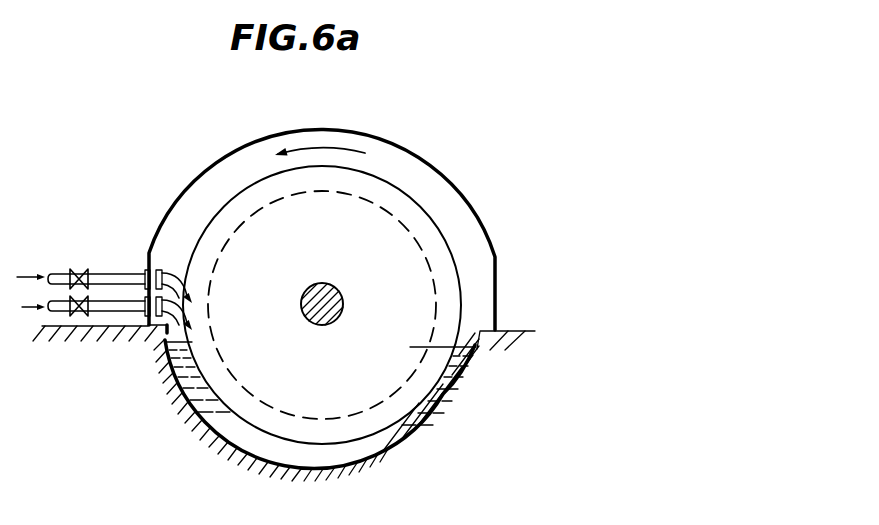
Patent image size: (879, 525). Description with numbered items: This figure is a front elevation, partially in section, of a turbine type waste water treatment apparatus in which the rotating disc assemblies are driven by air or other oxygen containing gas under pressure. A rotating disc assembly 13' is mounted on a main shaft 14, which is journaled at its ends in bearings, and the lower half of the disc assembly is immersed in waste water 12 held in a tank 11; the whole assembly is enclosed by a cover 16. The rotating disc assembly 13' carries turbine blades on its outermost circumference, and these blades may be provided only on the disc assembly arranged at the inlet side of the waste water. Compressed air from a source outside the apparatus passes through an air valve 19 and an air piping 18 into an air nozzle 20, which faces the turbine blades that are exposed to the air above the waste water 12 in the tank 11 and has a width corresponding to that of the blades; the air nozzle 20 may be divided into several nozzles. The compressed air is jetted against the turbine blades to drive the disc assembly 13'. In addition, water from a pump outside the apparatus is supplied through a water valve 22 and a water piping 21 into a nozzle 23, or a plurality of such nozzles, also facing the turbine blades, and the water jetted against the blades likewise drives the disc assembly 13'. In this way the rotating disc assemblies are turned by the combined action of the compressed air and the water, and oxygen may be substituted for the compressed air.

The tank 11 is at (362, 462).
The waste water 12 is at (469, 345).
The rotating disc assembly 13' is at (343, 288).
The main shaft 14 is at (336, 298).
The cover 16 is at (234, 153).
The air piping 18 is at (107, 313).
The air valve 19 is at (73, 328).
The air nozzle 20 is at (162, 333).
The water piping 21 is at (117, 275).
The water valve 22 is at (75, 270).
The nozzle 23 is at (162, 272).